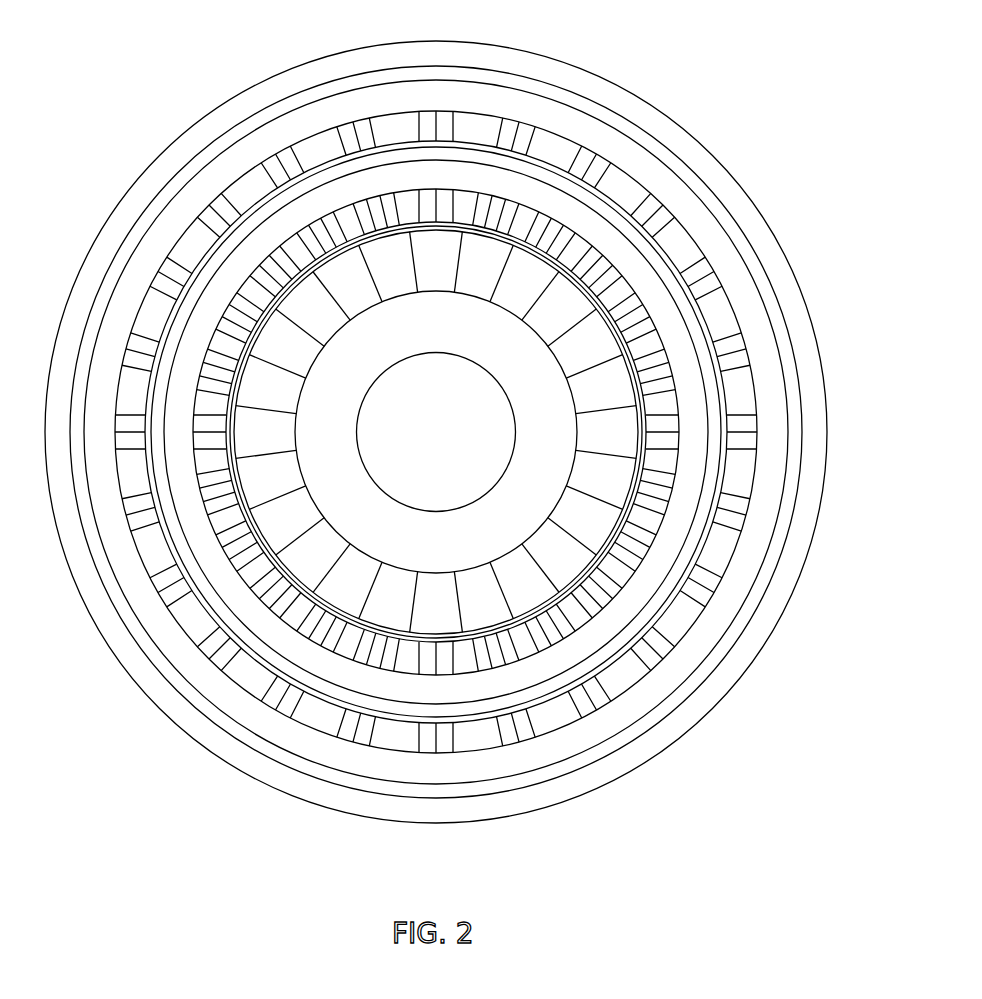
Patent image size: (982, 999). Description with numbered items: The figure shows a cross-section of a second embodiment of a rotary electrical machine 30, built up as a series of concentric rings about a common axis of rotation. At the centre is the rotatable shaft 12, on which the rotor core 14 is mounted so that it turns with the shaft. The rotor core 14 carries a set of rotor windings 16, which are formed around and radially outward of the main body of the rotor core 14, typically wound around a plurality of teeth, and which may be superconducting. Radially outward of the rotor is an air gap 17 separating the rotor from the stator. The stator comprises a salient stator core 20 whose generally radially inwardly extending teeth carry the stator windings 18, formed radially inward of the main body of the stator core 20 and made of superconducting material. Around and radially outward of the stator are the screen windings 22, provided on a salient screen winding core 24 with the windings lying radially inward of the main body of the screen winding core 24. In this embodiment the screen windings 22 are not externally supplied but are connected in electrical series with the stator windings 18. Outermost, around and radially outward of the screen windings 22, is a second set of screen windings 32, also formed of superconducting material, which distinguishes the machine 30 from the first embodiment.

The rotatable shaft 12 is at (378, 430).
The rotor core 14 is at (362, 532).
The rotor windings 16 is at (598, 528).
The air gap 17 is at (524, 237).
The stator windings 18 is at (652, 522).
The stator core 20 is at (692, 508).
The screen windings 22 is at (752, 398).
The screen winding core 24 is at (767, 474).
The rotary electrical machine 30 is at (768, 60).
The second set of screen windings 32 is at (797, 284).